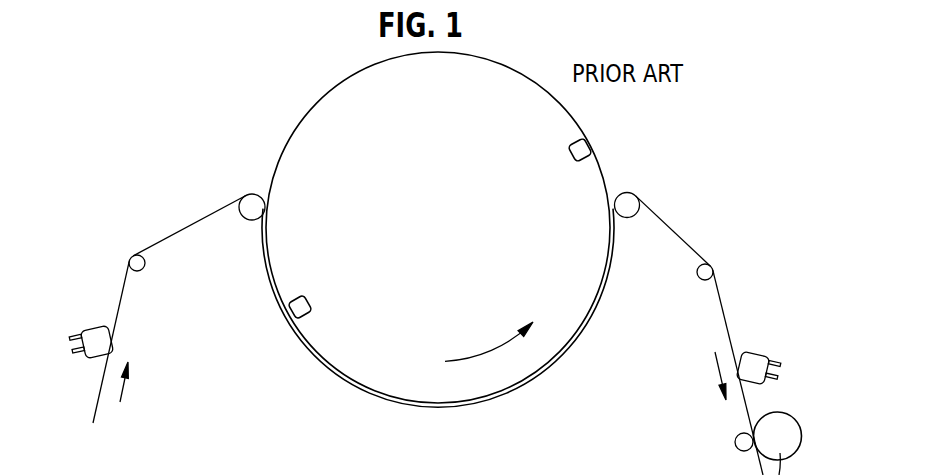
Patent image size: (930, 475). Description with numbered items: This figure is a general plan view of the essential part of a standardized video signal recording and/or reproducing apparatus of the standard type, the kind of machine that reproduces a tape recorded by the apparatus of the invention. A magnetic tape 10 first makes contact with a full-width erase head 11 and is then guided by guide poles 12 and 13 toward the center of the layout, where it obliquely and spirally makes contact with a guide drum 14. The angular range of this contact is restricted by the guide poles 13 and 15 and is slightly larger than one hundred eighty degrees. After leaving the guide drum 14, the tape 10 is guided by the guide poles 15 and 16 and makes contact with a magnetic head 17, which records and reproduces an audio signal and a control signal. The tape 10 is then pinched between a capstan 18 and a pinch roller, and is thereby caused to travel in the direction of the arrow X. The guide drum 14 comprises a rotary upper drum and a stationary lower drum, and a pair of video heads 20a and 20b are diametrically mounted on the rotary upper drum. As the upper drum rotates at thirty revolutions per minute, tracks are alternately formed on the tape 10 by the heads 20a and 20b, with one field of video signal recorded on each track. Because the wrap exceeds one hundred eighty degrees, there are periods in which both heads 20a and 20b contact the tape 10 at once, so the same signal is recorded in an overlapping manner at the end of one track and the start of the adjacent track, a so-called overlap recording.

The magnetic tape 10 is at (192, 222).
The full-width erase head 11 is at (97, 327).
The guide pole 12 is at (142, 269).
The guide pole 13 is at (250, 219).
The guide drum 14 is at (279, 155).
The guide pole 15 is at (626, 218).
The guide pole 16 is at (698, 281).
The magnetic head 17 is at (750, 354).
The capstan 18 is at (735, 440).
The video head 20a is at (308, 297).
The video head 20b is at (570, 144).